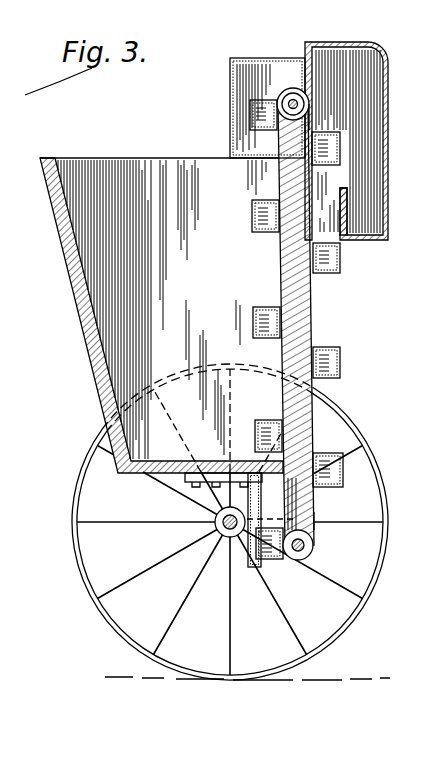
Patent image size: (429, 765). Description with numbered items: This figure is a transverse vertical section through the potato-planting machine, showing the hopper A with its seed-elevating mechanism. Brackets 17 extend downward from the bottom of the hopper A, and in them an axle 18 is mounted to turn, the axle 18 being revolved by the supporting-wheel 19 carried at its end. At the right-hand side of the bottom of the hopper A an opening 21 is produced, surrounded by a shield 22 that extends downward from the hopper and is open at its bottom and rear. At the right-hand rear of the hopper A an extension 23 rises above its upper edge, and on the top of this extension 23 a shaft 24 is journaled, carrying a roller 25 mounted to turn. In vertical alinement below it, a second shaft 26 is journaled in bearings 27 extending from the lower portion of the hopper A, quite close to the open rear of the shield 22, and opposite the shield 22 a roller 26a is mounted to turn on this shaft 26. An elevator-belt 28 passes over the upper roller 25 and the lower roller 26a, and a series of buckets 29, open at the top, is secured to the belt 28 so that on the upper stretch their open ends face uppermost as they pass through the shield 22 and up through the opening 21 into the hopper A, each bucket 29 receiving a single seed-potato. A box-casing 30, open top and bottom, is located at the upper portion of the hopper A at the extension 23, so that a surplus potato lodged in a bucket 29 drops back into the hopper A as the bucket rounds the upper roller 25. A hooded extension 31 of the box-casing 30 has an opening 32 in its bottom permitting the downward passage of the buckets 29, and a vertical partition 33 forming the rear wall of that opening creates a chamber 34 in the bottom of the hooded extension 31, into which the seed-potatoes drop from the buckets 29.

The hopper A is at (161, 322).
The brackets 17 is at (230, 473).
The axle 18 is at (217, 540).
The supporting-wheel 19 is at (300, 633).
The opening 21 is at (263, 520).
The shield 22 is at (258, 562).
The extension 23 is at (306, 120).
The shaft 24 is at (293, 99).
The roller 25 is at (304, 98).
The second shaft 26 is at (314, 546).
The roller 26a is at (318, 520).
The bearings 27 is at (299, 504).
The elevator-belt 28 is at (312, 306).
The buckets 29 is at (263, 307).
The box-casing 30 is at (230, 97).
The hooded extension 31 is at (388, 92).
The opening 32 is at (340, 232).
The vertical partition 33 is at (331, 191).
The chamber 34 is at (356, 211).